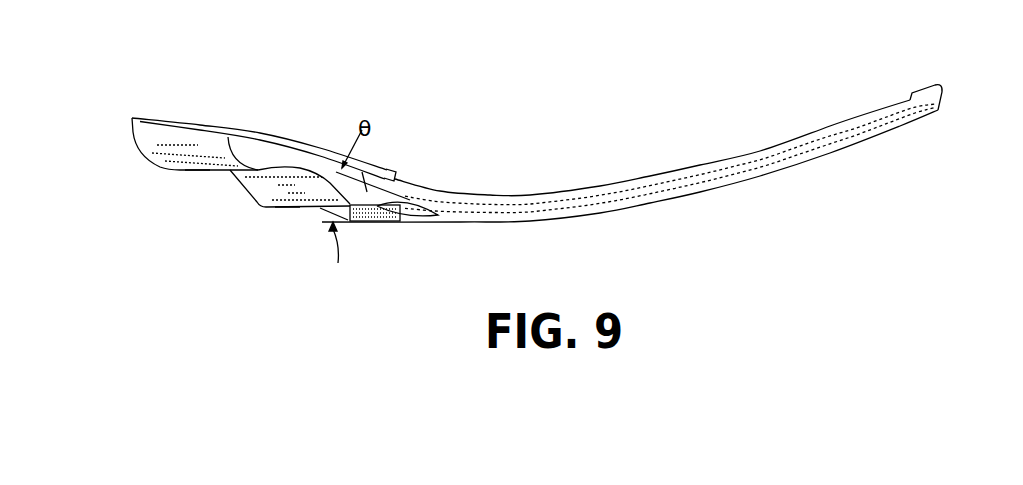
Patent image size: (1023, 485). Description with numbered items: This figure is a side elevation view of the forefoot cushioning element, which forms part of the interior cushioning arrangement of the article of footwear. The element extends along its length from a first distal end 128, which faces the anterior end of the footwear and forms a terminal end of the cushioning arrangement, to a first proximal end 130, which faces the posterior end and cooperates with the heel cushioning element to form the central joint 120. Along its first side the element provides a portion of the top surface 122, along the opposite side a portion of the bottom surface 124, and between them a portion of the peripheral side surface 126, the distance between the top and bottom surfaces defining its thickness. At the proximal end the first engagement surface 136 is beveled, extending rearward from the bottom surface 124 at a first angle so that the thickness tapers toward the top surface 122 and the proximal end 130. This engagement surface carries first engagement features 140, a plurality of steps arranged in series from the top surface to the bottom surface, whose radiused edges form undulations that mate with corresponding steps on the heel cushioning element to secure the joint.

The central joint 120 is at (271, 149).
The top surface 122 is at (792, 140).
The bottom surface 124 is at (738, 172).
The peripheral side surface 126 is at (632, 199).
The first distal end 128 is at (943, 93).
The first proximal end 130 is at (133, 118).
The first engagement surface 136 is at (267, 187).
The first engagement features 140 is at (197, 171).